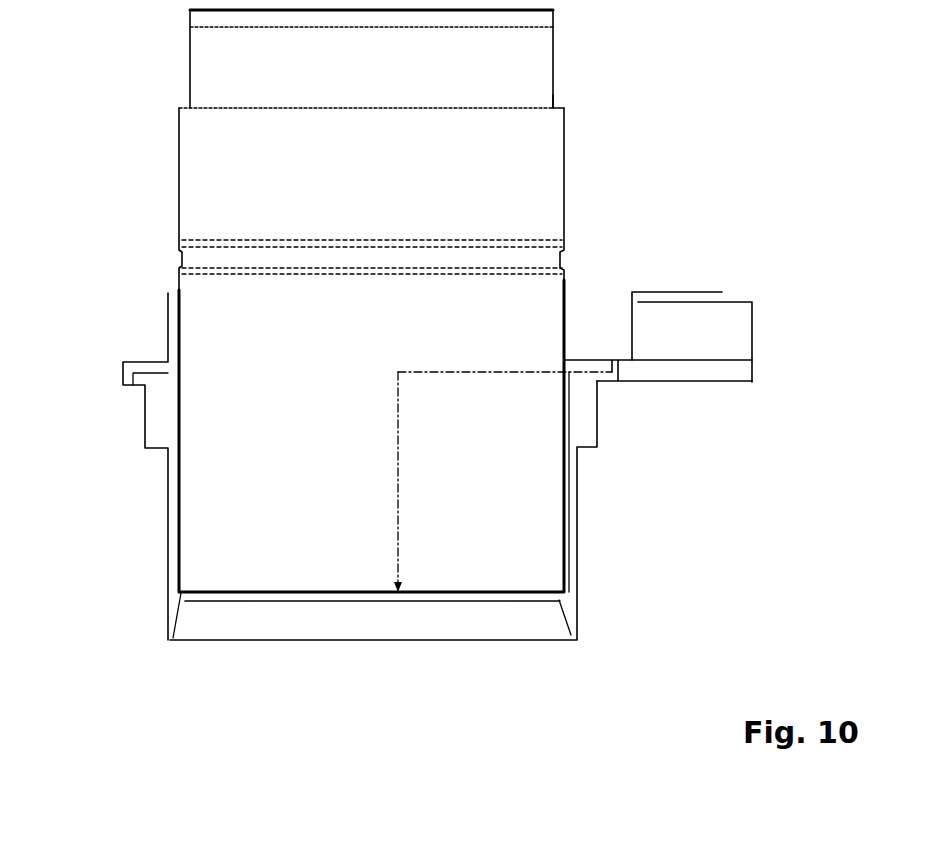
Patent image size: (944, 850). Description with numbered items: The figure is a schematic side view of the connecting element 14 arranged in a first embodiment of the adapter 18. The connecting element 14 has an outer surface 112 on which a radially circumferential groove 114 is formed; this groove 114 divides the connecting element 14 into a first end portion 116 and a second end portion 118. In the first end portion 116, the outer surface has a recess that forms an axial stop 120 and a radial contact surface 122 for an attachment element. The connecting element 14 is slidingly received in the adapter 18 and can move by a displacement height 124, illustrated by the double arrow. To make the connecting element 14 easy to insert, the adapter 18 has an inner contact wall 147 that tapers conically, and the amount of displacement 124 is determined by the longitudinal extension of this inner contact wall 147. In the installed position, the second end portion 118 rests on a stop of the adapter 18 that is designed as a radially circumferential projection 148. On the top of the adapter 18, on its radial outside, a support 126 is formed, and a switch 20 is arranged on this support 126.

The connecting element 14 is at (626, 163).
The adapter 18 is at (122, 437).
The switch 20 is at (716, 315).
The outer surface 112 is at (574, 296).
The radially circumferential groove 114 is at (190, 255).
The first end portion 116 is at (165, 175).
The second end portion 118 is at (622, 550).
The axial stop 120 is at (558, 98).
The radial contact surface 122 is at (188, 64).
The displacement height 124 is at (398, 488).
The support 126 is at (695, 385).
The inner contact wall 147 is at (558, 538).
The radially circumferential projection 148 is at (185, 588).